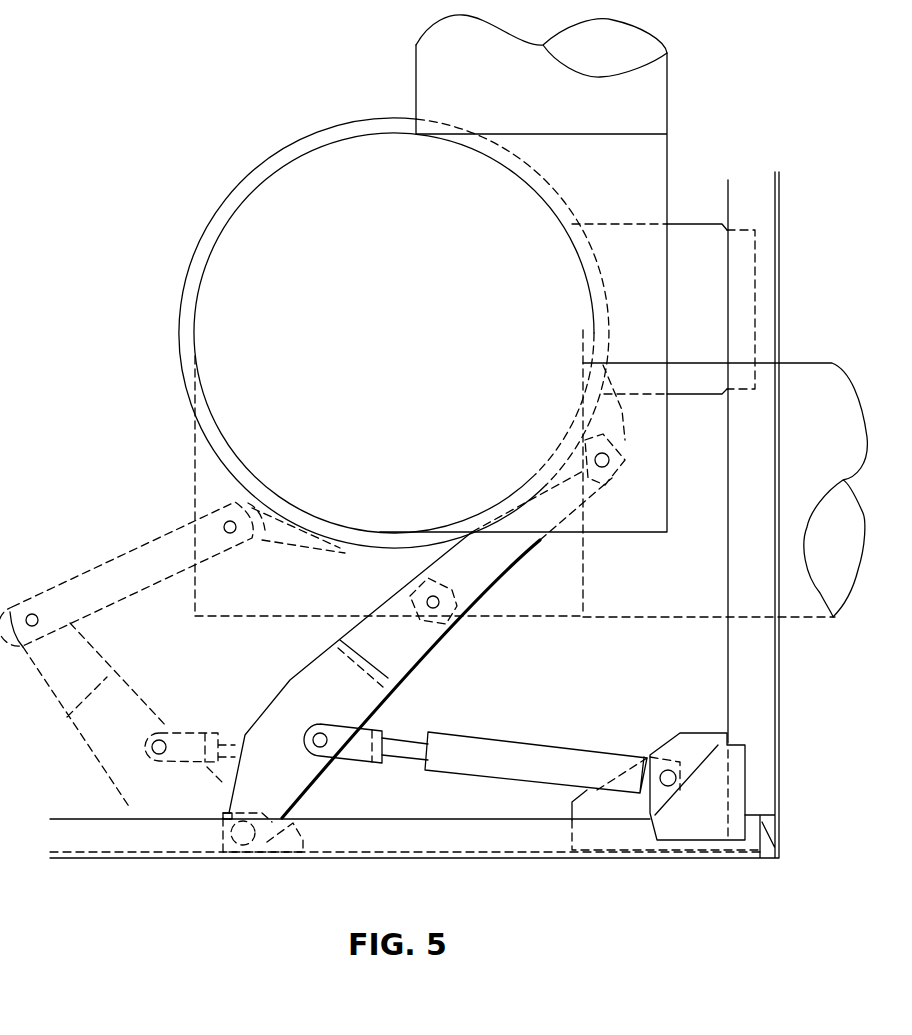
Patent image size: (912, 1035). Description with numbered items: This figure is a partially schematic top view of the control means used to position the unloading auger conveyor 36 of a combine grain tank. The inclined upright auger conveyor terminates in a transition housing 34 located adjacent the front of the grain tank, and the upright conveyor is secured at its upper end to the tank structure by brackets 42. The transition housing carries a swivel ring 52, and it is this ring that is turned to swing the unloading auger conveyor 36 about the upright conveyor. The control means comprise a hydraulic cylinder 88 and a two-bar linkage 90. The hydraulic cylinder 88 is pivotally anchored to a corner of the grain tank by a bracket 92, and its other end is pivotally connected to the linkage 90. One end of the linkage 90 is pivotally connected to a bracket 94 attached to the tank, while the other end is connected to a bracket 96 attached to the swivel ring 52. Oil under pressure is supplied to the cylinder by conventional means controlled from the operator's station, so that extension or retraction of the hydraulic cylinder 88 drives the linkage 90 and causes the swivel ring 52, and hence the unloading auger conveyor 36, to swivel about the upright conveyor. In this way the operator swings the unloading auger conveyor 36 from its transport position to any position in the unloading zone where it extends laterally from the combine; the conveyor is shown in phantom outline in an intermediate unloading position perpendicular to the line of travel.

The transition housing 34 is at (275, 168).
The unloading auger conveyor 36 is at (413, 42).
The brackets 42 is at (692, 228).
The swivel ring 52 is at (182, 310).
The hydraulic cylinder 88 is at (525, 750).
The two-bar linkage 90 is at (132, 674).
The bracket 92 is at (688, 745).
The bracket 94 is at (295, 826).
The bracket 96 is at (620, 425).